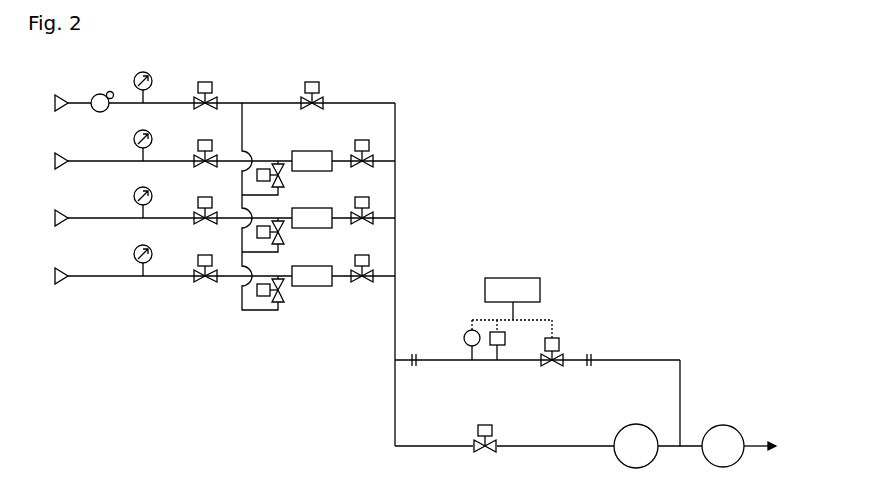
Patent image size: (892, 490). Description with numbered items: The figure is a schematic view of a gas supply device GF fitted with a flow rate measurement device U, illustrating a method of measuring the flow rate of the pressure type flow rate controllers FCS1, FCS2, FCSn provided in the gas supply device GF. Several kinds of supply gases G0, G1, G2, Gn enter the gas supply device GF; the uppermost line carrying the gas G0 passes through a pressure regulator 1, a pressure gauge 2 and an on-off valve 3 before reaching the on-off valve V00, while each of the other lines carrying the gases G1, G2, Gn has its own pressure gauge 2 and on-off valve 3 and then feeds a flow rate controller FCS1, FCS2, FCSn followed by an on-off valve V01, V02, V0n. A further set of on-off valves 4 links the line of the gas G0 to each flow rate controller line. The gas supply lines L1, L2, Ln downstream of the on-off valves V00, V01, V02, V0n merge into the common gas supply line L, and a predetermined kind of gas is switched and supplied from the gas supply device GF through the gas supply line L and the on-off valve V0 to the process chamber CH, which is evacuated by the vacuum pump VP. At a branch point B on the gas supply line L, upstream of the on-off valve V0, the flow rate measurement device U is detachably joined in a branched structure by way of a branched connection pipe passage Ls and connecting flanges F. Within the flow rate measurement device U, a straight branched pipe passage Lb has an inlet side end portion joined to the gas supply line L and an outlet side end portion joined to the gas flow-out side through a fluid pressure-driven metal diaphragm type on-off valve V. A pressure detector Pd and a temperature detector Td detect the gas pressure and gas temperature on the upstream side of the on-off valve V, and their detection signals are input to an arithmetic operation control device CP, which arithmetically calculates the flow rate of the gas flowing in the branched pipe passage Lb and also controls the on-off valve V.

The pressure regulator 1 is at (101, 94).
The pressure gauge 2 is at (150, 76).
The on-off valve 3 is at (211, 82).
The on-off valve 4 is at (263, 169).
The supply gas G0 is at (206, 104).
The supply gas G1 is at (206, 162).
The supply gas G2 is at (206, 219).
The supply gas Gn is at (206, 277).
The gas supply device GF is at (155, 298).
The flow rate controller FCS1 is at (312, 161).
The flow rate controller FCS2 is at (312, 218).
The flow rate controller FCSn is at (312, 276).
The on-off valve V00 is at (311, 82).
The on-off valve V01 is at (361, 140).
The on-off valve V02 is at (361, 197).
The on-off valve V0n is at (361, 255).
The gas supply line L is at (395, 320).
The gas supply line L1 is at (397, 134).
The gas supply line L2 is at (397, 184).
The gas supply line Ln is at (397, 240).
The branch point B is at (395, 362).
The branched connection pipe passage Ls is at (413, 354).
The branched pipe passage Lb is at (445, 362).
The connecting flange F is at (418, 366).
The temperature detector Td is at (465, 334).
The pressure detector Pd is at (505, 338).
The arithmetic operation control device CP is at (513, 278).
The on-off valve V is at (549, 368).
The on-off valve V0 is at (487, 425).
The flow rate measurement device U is at (583, 311).
The process chamber CH is at (636, 424).
The vacuum pump VP is at (724, 425).